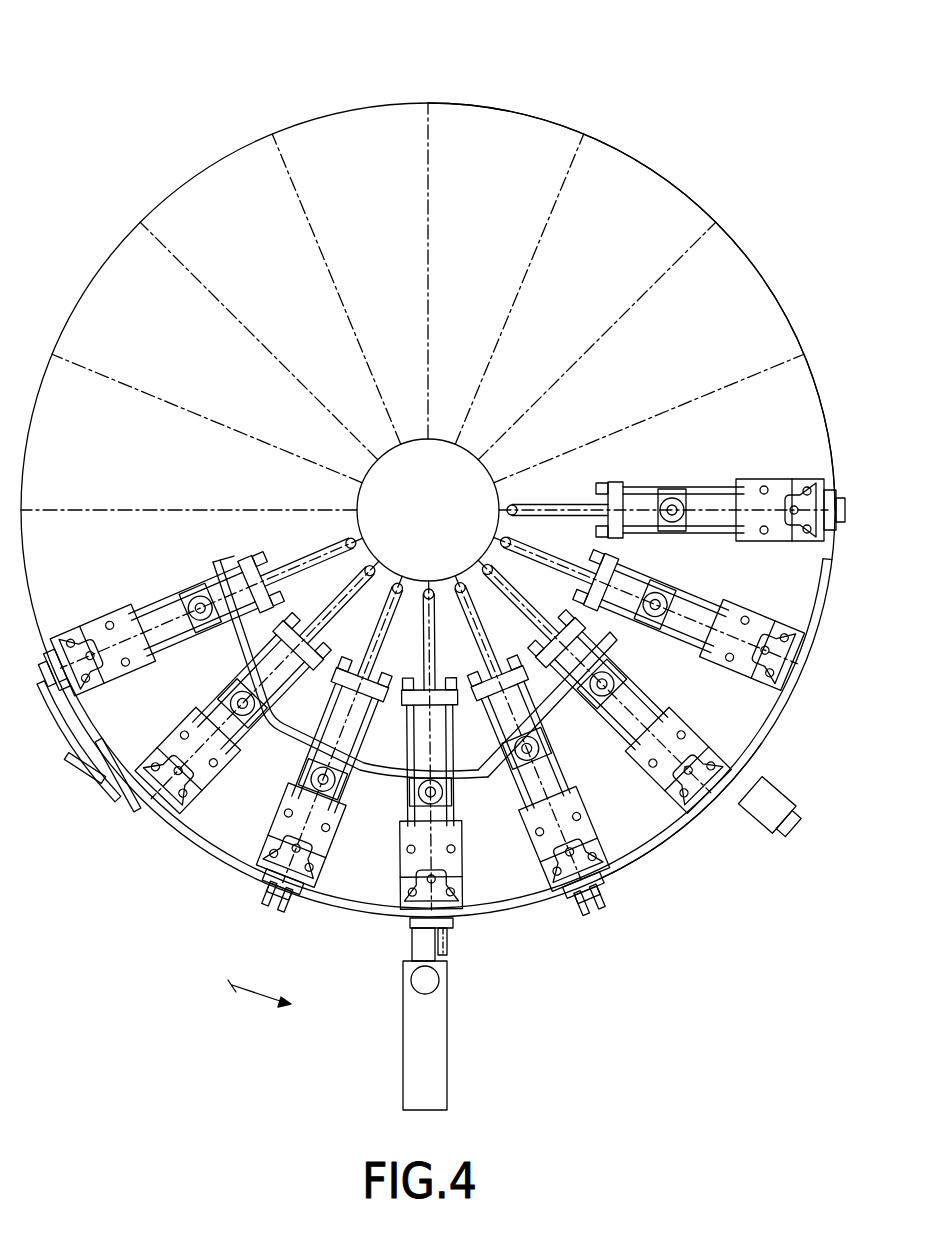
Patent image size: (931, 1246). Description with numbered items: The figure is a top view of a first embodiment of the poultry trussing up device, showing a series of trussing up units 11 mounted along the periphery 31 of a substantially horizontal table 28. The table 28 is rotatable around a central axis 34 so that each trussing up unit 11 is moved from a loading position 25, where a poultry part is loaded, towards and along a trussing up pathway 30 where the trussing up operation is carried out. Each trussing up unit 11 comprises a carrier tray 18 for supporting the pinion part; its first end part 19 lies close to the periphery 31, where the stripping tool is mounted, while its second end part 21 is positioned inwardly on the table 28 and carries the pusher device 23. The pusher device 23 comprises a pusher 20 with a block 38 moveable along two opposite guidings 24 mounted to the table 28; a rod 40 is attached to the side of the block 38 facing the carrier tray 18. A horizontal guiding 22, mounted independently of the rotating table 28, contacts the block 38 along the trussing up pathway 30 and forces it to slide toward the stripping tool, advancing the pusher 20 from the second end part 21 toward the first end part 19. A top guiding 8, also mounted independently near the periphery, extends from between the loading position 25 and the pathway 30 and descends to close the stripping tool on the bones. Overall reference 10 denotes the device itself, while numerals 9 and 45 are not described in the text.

The top guiding 8 is at (820, 612).
The curved guide rail 9 is at (430, 660).
The rotary assembly apparatus 10 is at (548, 96).
The trussing up unit 11 is at (730, 466).
The carrier tray 18 is at (760, 540).
The first end part of the carrier tray 19 is at (829, 482).
The pusher 20 is at (256, 518).
The second end part of the carrier tray 21 is at (738, 520).
The horizontal guiding 22 is at (557, 703).
The pusher device 23 is at (640, 696).
The guidings 24 is at (658, 699).
The loading position 25 is at (758, 258).
The table 28 is at (758, 343).
The trussing up pathway 30 is at (508, 1021).
The periphery 31 is at (673, 843).
The central axis 34 is at (449, 523).
The block 38 is at (672, 490).
The rod 40 is at (543, 785).
The sensor bracket 45 is at (100, 826).